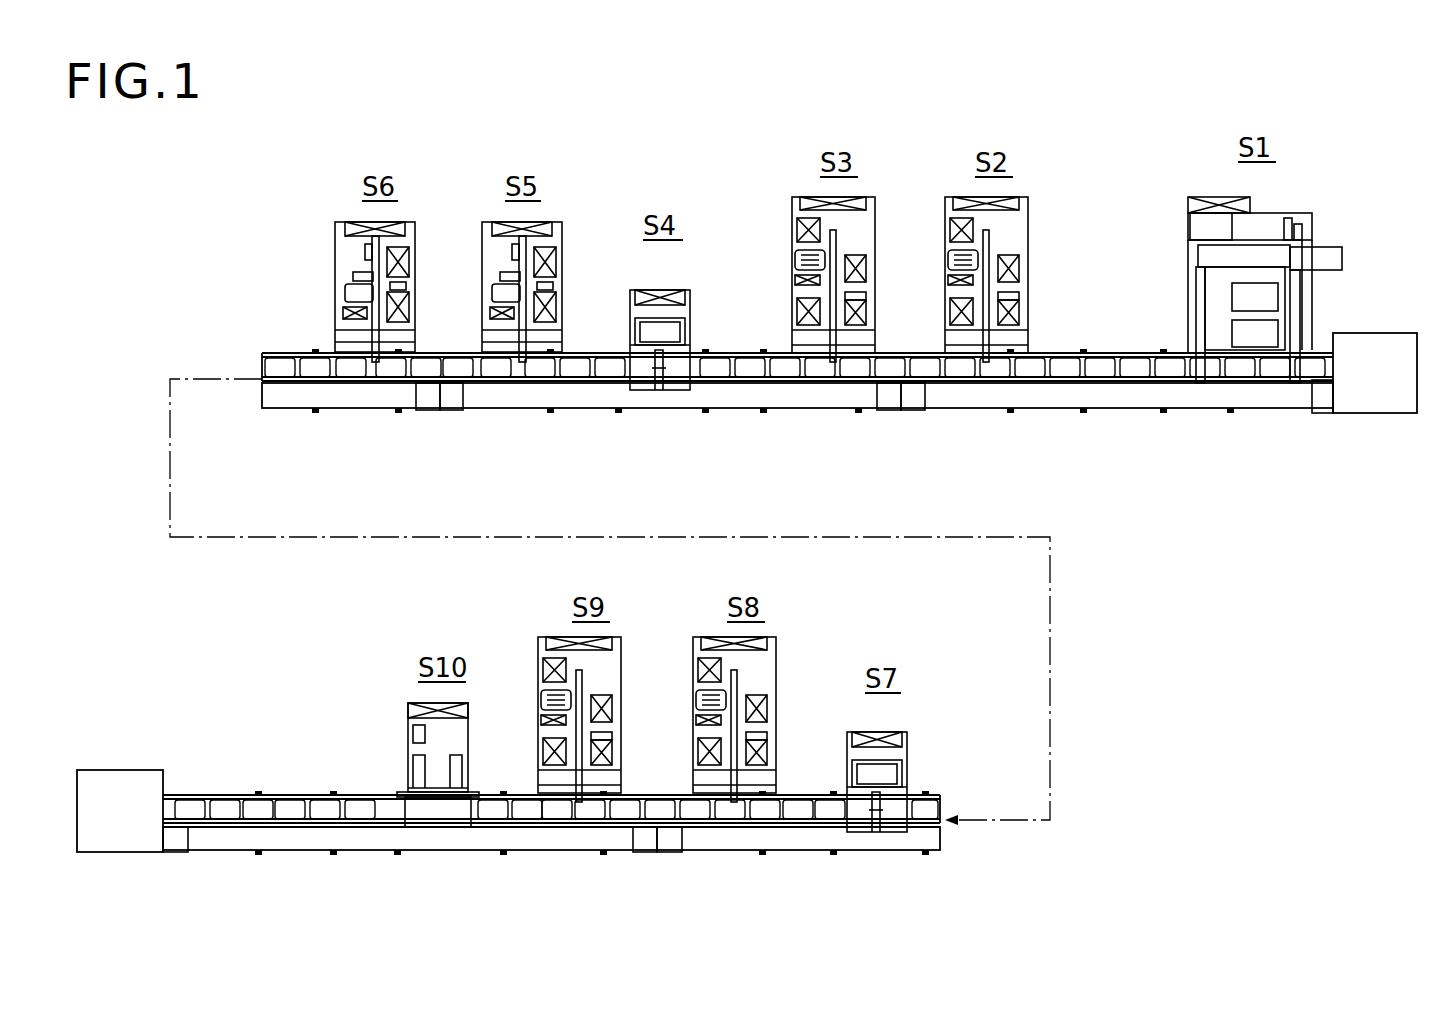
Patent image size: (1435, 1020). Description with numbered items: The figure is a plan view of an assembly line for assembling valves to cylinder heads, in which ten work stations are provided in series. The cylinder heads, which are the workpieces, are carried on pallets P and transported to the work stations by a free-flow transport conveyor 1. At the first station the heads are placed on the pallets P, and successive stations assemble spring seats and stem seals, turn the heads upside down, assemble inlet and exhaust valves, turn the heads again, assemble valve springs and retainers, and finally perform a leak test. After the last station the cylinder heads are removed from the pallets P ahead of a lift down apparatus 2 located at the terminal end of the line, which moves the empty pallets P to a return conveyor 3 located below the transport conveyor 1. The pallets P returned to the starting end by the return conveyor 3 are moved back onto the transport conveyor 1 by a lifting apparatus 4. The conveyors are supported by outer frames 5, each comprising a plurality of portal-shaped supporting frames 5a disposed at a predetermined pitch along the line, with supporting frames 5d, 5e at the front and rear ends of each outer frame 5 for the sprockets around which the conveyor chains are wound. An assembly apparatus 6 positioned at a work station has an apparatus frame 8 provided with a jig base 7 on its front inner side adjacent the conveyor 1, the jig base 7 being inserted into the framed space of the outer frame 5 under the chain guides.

The free-flow transport conveyor 1 is at (249, 797).
The lift down apparatus 2 is at (125, 790).
The return conveyor 3 is at (245, 832).
The lifting apparatus 4 is at (1376, 350).
The outer frame 5 is at (748, 647).
The portal-shaped supporting frame 5a is at (744, 626).
The supporting frame at front end 5d is at (552, 643).
The supporting frame at rear end 5e is at (867, 642).
The assembly apparatus 6 is at (566, 226).
The jig base 7 is at (488, 351).
The apparatus frame 8 is at (490, 244).
The pallet P is at (750, 563).